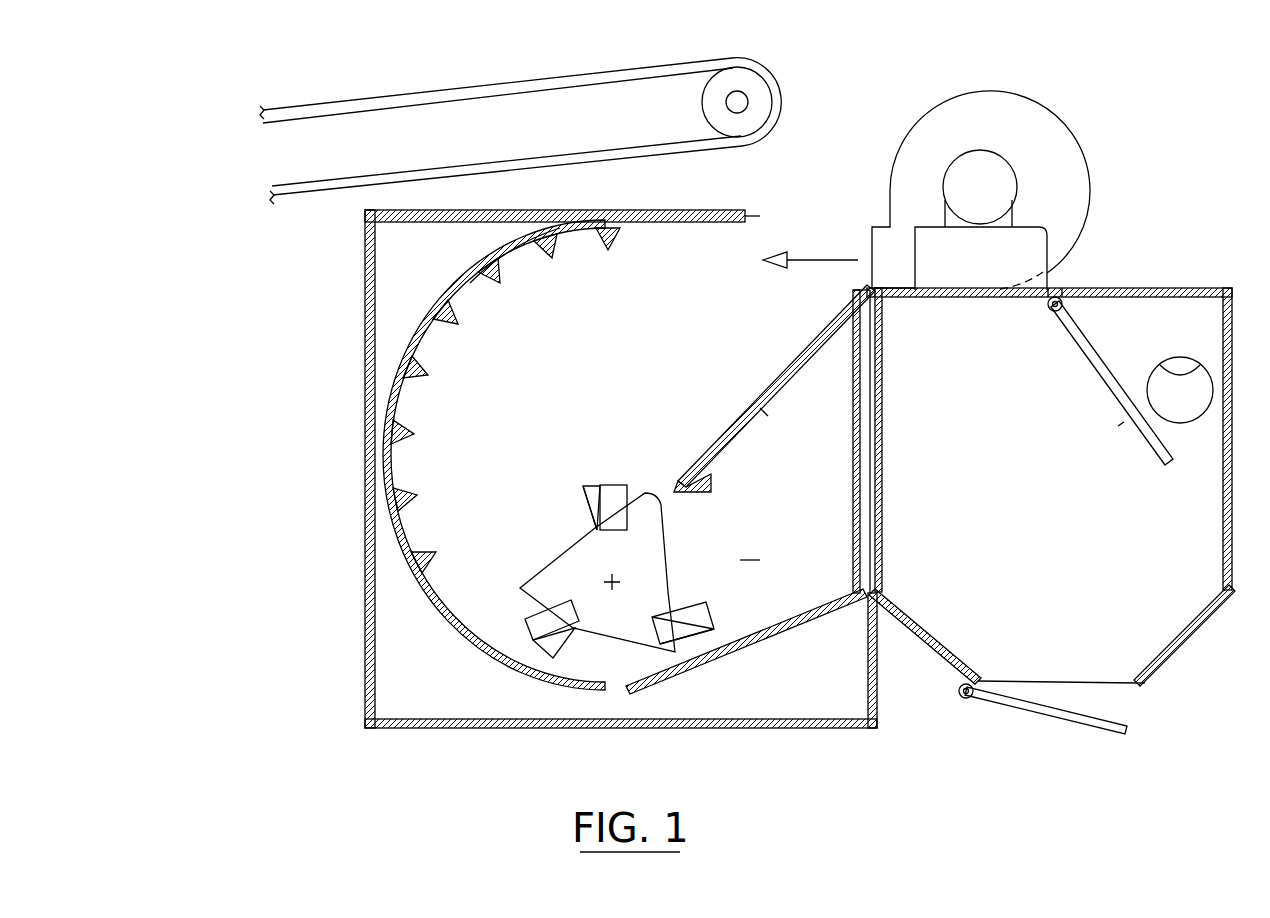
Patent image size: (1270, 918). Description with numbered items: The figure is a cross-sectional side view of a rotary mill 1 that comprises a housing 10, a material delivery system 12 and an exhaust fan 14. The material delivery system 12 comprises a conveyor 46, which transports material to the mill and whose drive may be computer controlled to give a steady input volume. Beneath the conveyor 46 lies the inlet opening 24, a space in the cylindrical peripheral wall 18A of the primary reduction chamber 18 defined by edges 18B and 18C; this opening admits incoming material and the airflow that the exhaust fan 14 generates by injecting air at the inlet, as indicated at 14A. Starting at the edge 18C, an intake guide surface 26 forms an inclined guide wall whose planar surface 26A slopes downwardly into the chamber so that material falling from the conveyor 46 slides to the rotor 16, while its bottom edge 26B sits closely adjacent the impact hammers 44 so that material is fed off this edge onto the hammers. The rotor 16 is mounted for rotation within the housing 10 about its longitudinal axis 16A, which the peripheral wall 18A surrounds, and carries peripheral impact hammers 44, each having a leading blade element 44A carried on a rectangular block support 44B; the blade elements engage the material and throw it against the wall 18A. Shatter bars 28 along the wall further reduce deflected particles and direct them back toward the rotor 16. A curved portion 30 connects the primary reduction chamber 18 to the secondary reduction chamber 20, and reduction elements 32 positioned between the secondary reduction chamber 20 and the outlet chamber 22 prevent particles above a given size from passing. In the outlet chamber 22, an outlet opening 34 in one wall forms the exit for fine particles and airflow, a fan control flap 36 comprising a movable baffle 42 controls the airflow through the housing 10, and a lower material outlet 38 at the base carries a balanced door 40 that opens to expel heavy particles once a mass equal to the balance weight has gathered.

The rotary mill 1 is at (308, 350).
The housing 10 is at (350, 612).
The material delivery system 12 is at (330, 90).
The exhaust fan 14 is at (1079, 116).
The injected air 14A is at (866, 240).
The rotor 16 is at (562, 538).
The longitudinal axis 16A is at (620, 578).
The primary reduction chamber 18 is at (432, 461).
The peripheral wall 18A is at (458, 278).
The edge 18B is at (732, 264).
The edge 18C is at (868, 290).
The secondary reduction chamber 20 is at (785, 543).
The outlet chamber 22 is at (995, 393).
The inlet opening 24 is at (808, 212).
The intake guide surface 26 is at (768, 385).
The planar surface 26A is at (760, 420).
The bottom edge 26B is at (688, 478).
The shatter bars 28 is at (553, 258).
The curved portion 30 is at (570, 672).
The reduction elements 32 is at (893, 488).
The outlet opening 34 is at (1180, 362).
The fan control flap 36 is at (1113, 430).
The lower material outlet 38 is at (1133, 705).
The balanced door 40 is at (1050, 708).
The movable baffle 42 is at (1105, 400).
The impact hammers 44 is at (612, 485).
The leading blade element 44A is at (580, 488).
The support 44B is at (695, 652).
The conveyor 46 is at (785, 84).